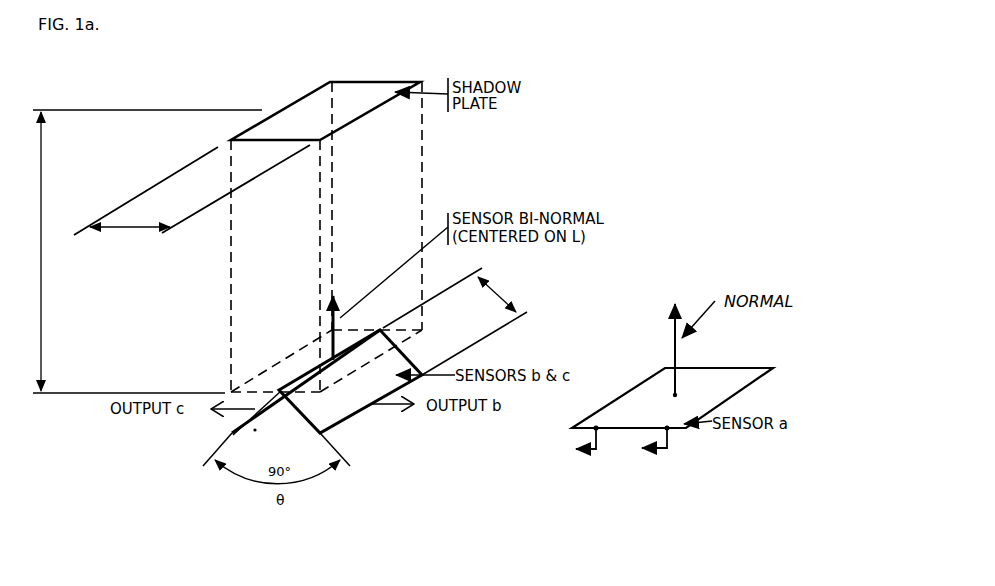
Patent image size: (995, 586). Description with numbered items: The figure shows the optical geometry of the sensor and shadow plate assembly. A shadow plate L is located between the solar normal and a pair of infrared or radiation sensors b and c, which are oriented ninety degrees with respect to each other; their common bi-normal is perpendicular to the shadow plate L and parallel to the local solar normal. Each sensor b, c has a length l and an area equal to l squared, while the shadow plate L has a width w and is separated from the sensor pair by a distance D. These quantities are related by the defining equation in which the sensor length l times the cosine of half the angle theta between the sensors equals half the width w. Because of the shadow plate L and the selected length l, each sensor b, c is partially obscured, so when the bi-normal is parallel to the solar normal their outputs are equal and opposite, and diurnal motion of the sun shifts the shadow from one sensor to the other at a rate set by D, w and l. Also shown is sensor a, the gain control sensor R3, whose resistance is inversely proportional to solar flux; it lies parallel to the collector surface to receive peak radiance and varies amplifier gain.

The separation distance D is at (135, 251).
The shadow plate L is at (325, 111).
The shadow plate width w is at (192, 190).
The sensor length l is at (455, 321).
The gain control sensor a is at (672, 366).
The sensor b is at (350, 381).
The sensor c is at (306, 382).
The gain control sensor resistance R3 is at (623, 455).